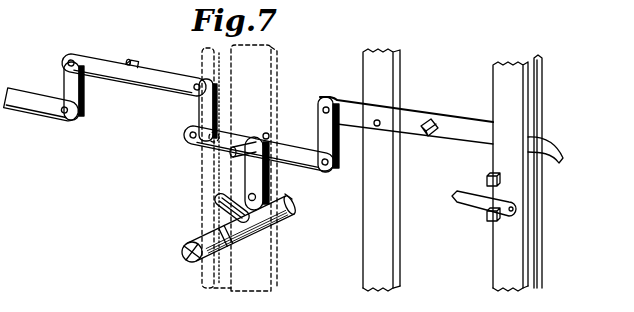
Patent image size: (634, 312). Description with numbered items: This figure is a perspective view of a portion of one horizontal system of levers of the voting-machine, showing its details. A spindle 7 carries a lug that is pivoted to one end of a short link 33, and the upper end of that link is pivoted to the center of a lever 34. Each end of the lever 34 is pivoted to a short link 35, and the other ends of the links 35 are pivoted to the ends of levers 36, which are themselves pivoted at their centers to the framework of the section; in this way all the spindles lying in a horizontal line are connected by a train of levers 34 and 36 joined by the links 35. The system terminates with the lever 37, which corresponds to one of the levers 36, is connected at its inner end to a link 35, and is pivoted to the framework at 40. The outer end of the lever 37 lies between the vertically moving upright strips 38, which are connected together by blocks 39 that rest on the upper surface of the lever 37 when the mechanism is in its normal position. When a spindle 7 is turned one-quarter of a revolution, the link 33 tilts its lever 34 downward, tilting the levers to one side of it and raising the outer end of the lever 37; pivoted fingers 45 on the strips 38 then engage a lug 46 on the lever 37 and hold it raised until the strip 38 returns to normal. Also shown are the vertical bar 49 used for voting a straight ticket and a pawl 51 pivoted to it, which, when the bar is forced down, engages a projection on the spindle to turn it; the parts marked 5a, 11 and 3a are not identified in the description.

The lever 36 is at (158, 77).
The short link 35 is at (76, 95).
The lever 34 is at (288, 150).
The short link 33 is at (271, 167).
The pawl 51 is at (207, 165).
The tongue 5a is at (218, 203).
The vertical bar 49 is at (228, 215).
The rod head 11 is at (183, 254).
The spindle 7 is at (247, 243).
The rod end 3a is at (278, 213).
The pivot 40 is at (382, 122).
The lever 37 is at (452, 128).
The lug 46 is at (428, 137).
The block 39 is at (535, 123).
The pivoted finger 45 is at (477, 203).
The upright strip 38 is at (518, 277).